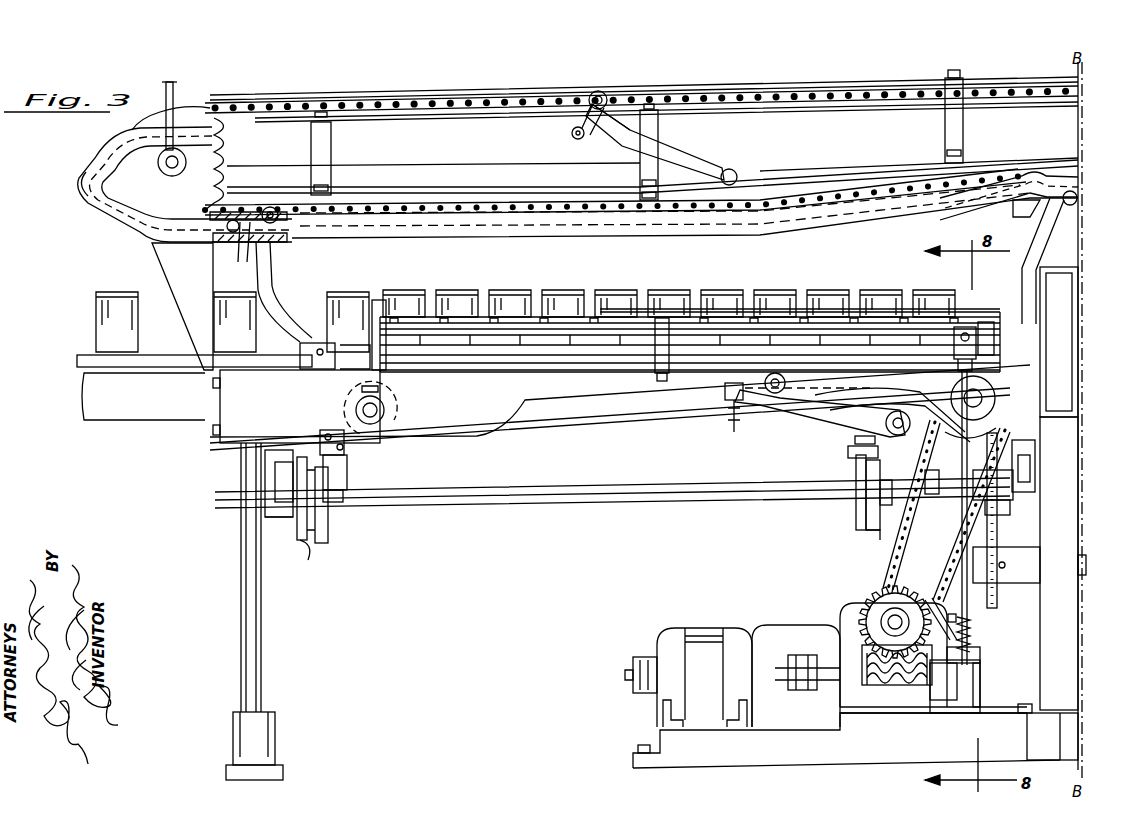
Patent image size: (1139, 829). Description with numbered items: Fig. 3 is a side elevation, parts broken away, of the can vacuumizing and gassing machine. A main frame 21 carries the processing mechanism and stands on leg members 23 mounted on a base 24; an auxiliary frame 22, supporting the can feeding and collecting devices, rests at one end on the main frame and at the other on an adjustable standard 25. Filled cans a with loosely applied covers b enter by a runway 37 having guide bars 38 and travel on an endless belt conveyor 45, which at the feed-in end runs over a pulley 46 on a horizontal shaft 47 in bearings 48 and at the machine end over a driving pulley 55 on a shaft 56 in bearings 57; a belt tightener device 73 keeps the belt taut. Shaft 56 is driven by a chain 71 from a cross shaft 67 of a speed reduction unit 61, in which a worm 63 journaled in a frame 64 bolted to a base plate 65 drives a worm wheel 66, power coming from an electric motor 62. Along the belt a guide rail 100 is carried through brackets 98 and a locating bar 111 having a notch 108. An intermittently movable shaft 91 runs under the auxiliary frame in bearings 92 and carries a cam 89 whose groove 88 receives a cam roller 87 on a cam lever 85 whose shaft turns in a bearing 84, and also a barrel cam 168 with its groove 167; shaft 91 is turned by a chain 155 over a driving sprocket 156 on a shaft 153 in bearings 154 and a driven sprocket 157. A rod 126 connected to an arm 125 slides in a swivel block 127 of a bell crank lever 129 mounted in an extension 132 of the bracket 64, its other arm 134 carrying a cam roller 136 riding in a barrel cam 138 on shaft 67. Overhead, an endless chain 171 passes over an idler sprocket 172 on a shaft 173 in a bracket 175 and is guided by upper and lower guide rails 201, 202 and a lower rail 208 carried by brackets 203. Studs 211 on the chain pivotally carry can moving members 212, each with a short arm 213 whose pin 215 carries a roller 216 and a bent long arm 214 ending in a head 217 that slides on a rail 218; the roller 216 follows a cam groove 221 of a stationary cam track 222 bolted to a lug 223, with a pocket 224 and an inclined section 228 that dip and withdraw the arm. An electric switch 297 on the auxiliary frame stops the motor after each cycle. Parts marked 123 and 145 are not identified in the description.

The main frame 21 is at (1079, 398).
The auxiliary frame 22 is at (552, 398).
The leg members 23 is at (1079, 638).
The base 24 is at (1079, 732).
The adjustable standard 25 is at (262, 641).
The runway 37 is at (84, 401).
The guide bars 38 is at (77, 361).
The endless belt conveyor 45 is at (600, 428).
The pulley 46 is at (402, 421).
The horizontal shaft 47 is at (384, 401).
The bearings 48 is at (378, 410).
The driving pulley 55 is at (986, 428).
The horizontal shaft 56 is at (982, 399).
The bearings 57 is at (990, 390).
The speed reduction unit 61 is at (846, 614).
The electric motor 62 is at (704, 628).
The worm 63 is at (890, 690).
The frame 64 is at (846, 633).
The base plate 65 is at (846, 736).
The worm wheel 66 is at (880, 596).
The cross shaft 67 is at (868, 600).
The endless chain 71 is at (892, 548).
The belt tightener device 73 is at (817, 405).
The bearing 84 is at (866, 396).
The cam lever 85 is at (855, 440).
The cam roller 87 is at (856, 453).
The groove 88 is at (868, 534).
The cam 89 is at (856, 518).
The intermittently movable shaft 91 is at (566, 502).
The bearings 92 is at (282, 519).
The brackets 98 is at (374, 300).
The guide rail 100 is at (522, 318).
The notch 108 is at (566, 318).
The locating bar 111 is at (940, 312).
The plate 123 is at (524, 355).
The arm 125 is at (978, 337).
The vertical rod 126 is at (960, 506).
The swivel block 127 is at (980, 659).
The bell crank lever 129 is at (953, 700).
The extension 132 is at (980, 685).
The arm 134 is at (972, 634).
The cam roller 136 is at (944, 614).
The barrel cam 138 is at (893, 615).
The bracket 145 is at (318, 353).
The shaft 153 is at (1086, 567).
The bearings 154 is at (1006, 565).
The chain 155 is at (988, 533).
The driving sprocket 156 is at (997, 606).
The driven sprocket 157 is at (988, 502).
The groove 167 is at (306, 559).
The barrel cam 168 is at (328, 540).
The endless chain 171 is at (855, 86).
The idler sprocket 172 is at (218, 160).
The horizontal shaft 173 is at (174, 170).
The bracket 175 is at (182, 306).
The upper guide rail 201 is at (770, 84).
The lower guide rail 202 is at (793, 109).
The brackets 203 is at (332, 161).
The lower guide rail 208 is at (1027, 207).
The studs 211 is at (604, 92).
The can moving member 212 is at (594, 92).
The short arm 213 is at (258, 211).
The long arm 214 is at (275, 265).
The pin 215 is at (577, 140).
The roller 216 is at (572, 136).
The head 217 is at (736, 170).
The rail 218 is at (857, 176).
The cam groove 221 is at (224, 133).
The cam track 222 is at (108, 153).
The lug 223 is at (175, 90).
The pocket 224 is at (88, 184).
The inclined section 228 is at (1008, 186).
The electric switch 297 is at (347, 477).
The filled cans a is at (96, 313).
The loosely applied covers b is at (122, 282).